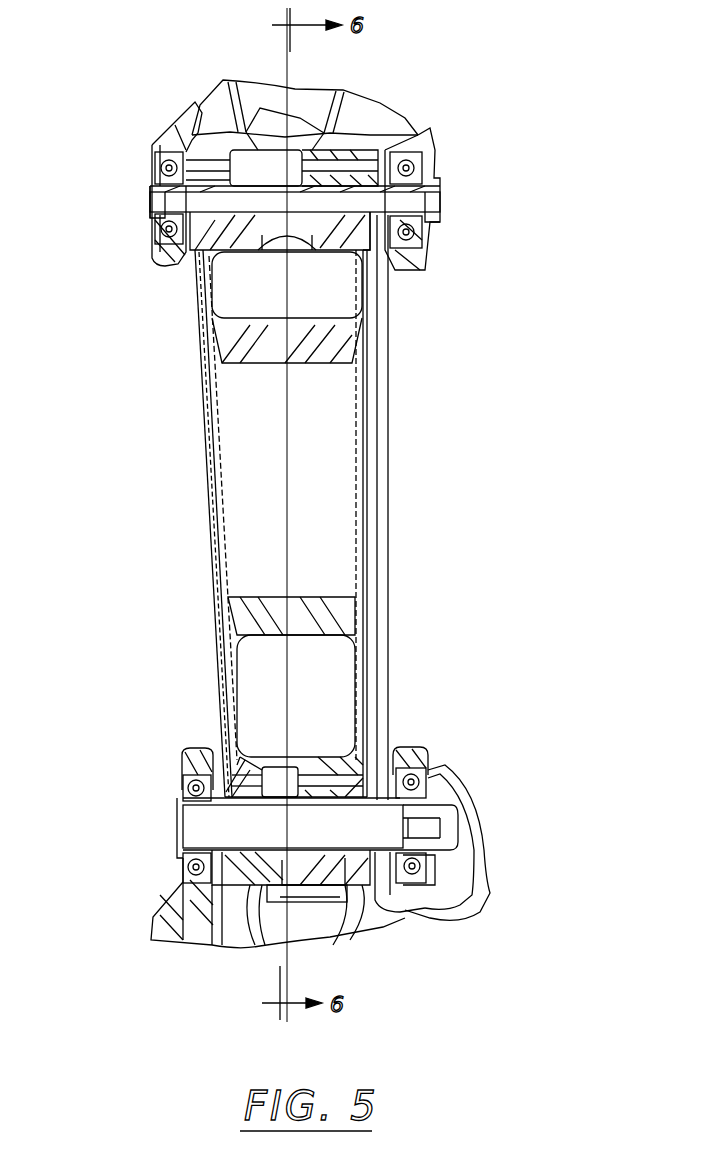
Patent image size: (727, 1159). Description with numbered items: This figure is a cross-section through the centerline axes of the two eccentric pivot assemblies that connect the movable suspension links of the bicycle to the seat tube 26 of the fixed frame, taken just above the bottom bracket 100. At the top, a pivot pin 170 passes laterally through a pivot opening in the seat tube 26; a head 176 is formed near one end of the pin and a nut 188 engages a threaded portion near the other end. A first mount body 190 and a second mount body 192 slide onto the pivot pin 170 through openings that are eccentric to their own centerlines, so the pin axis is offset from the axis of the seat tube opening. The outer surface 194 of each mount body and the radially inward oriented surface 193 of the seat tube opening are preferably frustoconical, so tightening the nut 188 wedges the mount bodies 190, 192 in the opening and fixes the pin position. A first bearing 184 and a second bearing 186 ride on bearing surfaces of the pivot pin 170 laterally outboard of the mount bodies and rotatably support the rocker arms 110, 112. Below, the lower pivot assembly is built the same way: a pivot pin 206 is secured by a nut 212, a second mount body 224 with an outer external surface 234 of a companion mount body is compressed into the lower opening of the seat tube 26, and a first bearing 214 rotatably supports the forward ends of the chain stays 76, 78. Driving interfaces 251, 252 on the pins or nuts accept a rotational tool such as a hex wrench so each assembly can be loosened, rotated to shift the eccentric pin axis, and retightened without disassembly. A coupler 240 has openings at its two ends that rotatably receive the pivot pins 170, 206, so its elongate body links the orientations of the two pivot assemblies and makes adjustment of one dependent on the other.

The first mount body 190 is at (215, 150).
The rocker arm 110 is at (183, 122).
The rocker arm 112 is at (420, 135).
The second mount body 192 is at (350, 140).
The radially inward oriented surface 193 is at (395, 138).
The first bearing 184 is at (168, 168).
The head 176 is at (155, 212).
The second bearing 186 is at (422, 246).
The nut 188 is at (418, 230).
The pivot pin 170 is at (440, 197).
The driving interface 251 is at (150, 200).
The seat tube 26 is at (200, 465).
The outer surface 194 is at (355, 240).
The coupler 240 is at (390, 525).
The chain stay 76 is at (208, 748).
The chain stay 78 is at (413, 747).
The first bearing 214 is at (183, 781).
The driving interface 252 is at (445, 833).
The nut 212 is at (446, 790).
The pivot pin 206 is at (183, 860).
The second mount body 224 is at (262, 900).
The bottom bracket 100 is at (355, 885).
The outer external surface 234 is at (377, 885).